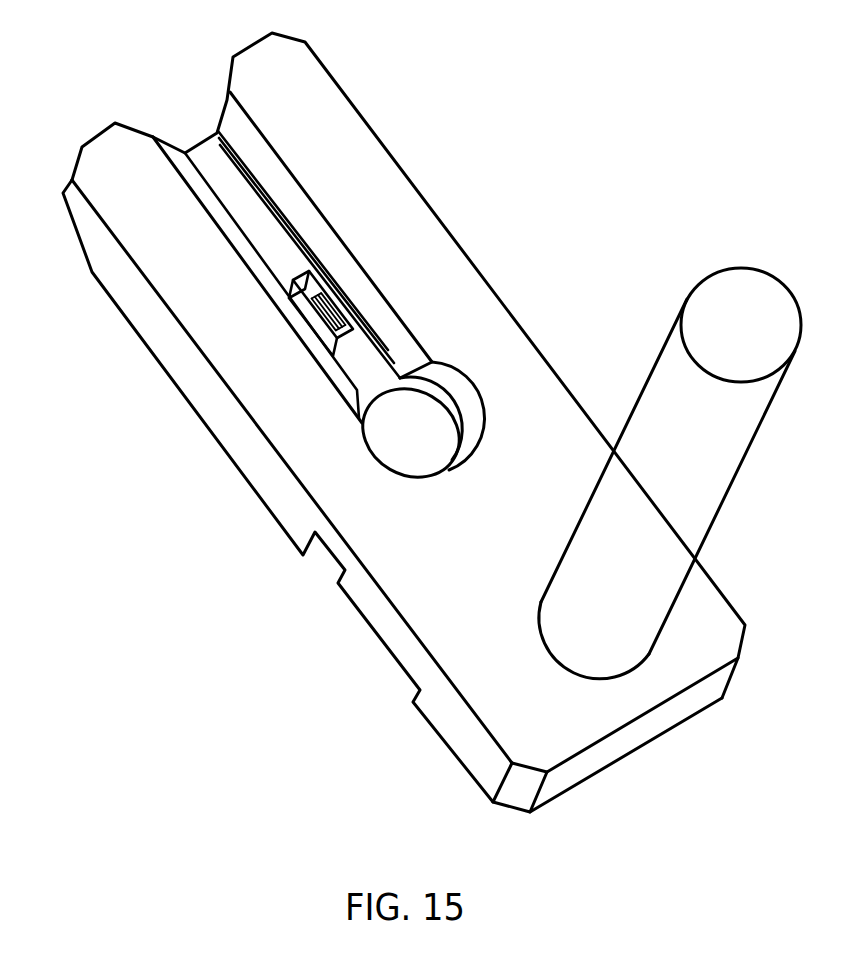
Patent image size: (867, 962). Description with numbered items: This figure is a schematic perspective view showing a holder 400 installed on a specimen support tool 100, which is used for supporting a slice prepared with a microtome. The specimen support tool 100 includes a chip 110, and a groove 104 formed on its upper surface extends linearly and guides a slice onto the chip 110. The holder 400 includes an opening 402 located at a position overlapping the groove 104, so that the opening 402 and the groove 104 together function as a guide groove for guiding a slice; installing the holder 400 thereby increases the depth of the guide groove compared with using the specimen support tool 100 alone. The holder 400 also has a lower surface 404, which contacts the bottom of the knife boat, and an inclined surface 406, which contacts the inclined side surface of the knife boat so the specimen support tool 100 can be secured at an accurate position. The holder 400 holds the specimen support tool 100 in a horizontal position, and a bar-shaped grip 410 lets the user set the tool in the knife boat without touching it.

The holder 400 is at (447, 310).
The opening 402 is at (262, 173).
The lower surface 404 is at (486, 804).
The inclined surface 406 is at (88, 136).
The grip 410 is at (747, 433).
The specimen support tool 100 is at (291, 275).
The groove 104 is at (235, 203).
The chip 110 is at (323, 318).